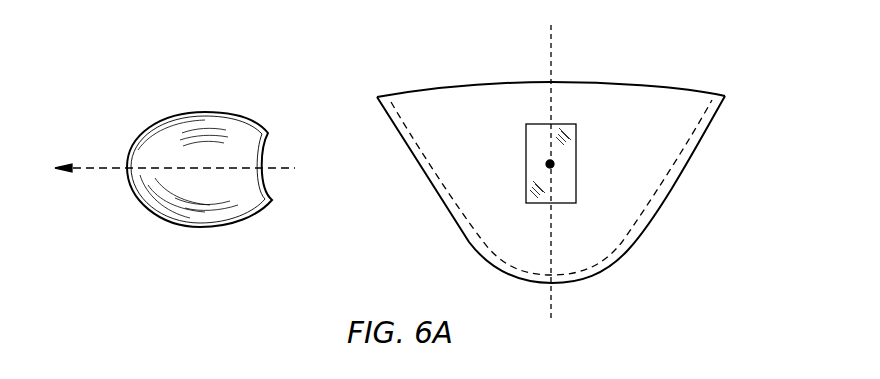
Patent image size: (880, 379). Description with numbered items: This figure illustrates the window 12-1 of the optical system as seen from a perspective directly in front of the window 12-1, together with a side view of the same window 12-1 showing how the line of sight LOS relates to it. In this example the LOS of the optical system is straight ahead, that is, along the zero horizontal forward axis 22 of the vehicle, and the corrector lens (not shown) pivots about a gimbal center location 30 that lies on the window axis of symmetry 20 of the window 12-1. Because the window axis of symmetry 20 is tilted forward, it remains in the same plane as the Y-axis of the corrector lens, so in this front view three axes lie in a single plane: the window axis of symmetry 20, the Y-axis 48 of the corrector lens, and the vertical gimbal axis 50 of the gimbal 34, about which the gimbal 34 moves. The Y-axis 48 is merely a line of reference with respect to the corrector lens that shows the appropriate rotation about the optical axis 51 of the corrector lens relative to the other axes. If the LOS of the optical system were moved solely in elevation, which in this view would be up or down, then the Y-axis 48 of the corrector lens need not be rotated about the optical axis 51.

The window 12-1 is at (195, 207).
The window axis of symmetry 20 is at (551, 32).
The zero horizontal forward axis 22 is at (72, 171).
The gimbal center location 30 is at (248, 165).
The gimbal 34 is at (576, 172).
The Y-axis of the corrector lens 48 is at (551, 60).
The vertical gimbal axis 50 is at (551, 105).
The optical axis of the corrector lens 51 is at (553, 162).
The line of sight LOS is at (86, 167).